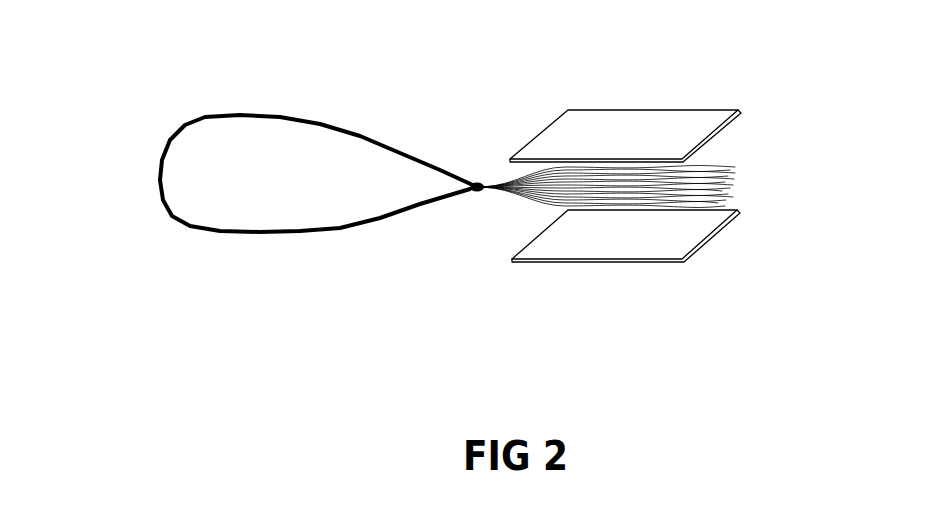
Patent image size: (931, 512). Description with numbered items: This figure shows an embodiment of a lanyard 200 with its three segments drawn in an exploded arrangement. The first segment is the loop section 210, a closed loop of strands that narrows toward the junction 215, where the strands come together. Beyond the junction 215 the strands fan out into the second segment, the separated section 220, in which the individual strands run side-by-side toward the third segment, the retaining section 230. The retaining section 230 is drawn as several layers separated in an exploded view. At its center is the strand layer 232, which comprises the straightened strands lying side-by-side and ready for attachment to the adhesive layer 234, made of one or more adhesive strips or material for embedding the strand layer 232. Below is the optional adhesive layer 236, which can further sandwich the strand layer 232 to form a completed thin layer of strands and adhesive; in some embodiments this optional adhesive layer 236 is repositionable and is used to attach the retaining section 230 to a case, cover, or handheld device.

The lanyard 200 is at (153, 68).
The loop section 210 is at (458, 129).
The junction 215 is at (477, 192).
The separated section 220 is at (503, 170).
The retaining section 230 is at (658, 168).
The strand layer 232 is at (740, 174).
The adhesive layer 234 is at (738, 118).
The optional adhesive layer 236 is at (702, 250).